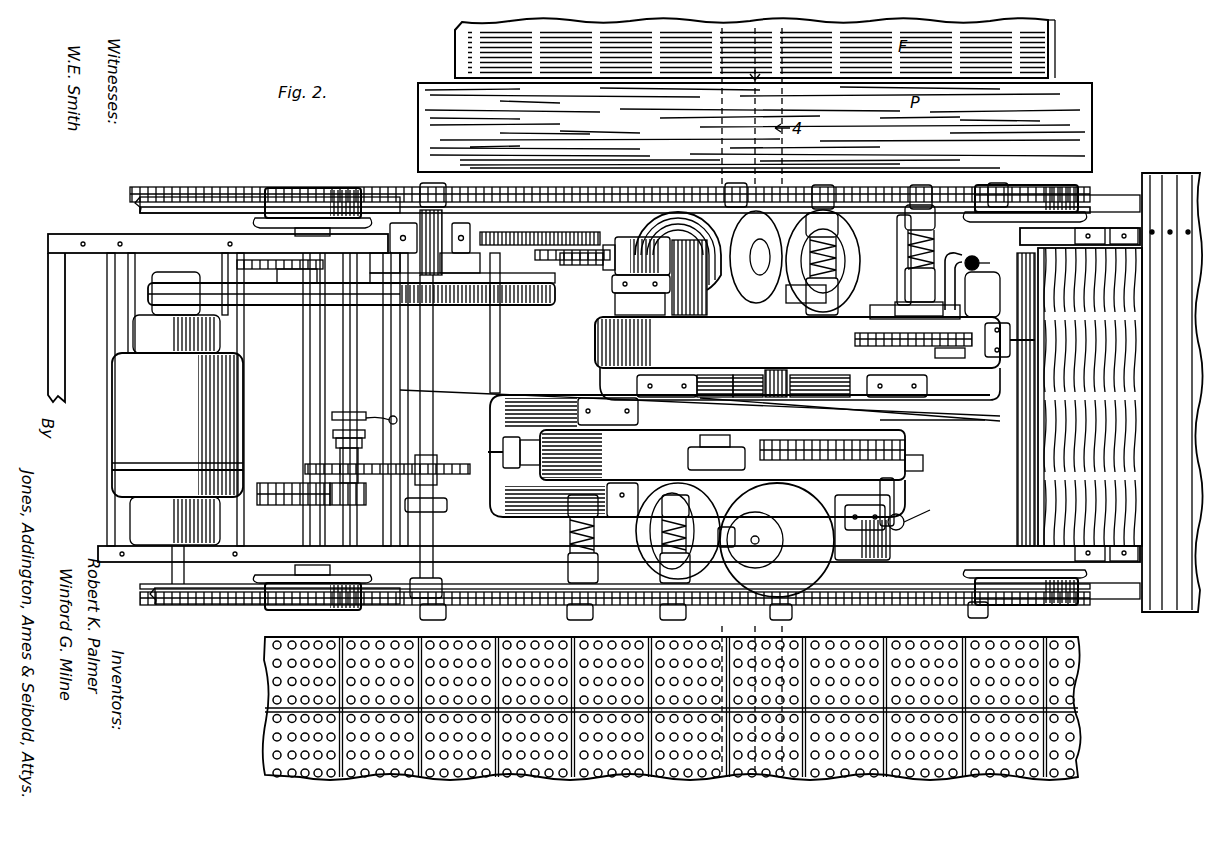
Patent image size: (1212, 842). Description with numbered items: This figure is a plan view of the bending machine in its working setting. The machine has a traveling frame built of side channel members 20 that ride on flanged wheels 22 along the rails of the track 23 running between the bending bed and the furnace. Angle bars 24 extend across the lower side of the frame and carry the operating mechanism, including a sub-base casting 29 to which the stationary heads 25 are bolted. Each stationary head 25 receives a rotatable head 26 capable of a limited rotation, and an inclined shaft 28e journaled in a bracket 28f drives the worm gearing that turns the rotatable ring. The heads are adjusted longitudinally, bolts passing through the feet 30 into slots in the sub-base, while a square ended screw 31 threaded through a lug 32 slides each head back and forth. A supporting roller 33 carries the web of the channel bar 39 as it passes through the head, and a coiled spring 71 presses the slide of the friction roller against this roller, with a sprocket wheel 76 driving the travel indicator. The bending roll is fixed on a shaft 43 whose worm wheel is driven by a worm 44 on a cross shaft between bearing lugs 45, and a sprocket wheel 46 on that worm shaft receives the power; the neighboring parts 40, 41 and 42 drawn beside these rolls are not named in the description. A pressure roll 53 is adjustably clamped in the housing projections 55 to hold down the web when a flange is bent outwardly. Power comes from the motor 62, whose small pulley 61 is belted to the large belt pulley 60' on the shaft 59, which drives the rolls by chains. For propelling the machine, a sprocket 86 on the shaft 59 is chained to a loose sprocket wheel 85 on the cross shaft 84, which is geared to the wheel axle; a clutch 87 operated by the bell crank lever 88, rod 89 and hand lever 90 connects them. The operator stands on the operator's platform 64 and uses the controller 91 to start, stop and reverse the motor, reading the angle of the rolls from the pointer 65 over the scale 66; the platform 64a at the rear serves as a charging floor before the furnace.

The side channel members 20 is at (100, 253).
The flanged wheels 22 is at (284, 190).
The track 23 is at (210, 197).
The angle bars 24 is at (776, 369).
The stationary head 25 is at (722, 457).
The rotatable head 26 is at (797, 342).
The inclined shaft 28e is at (979, 260).
The bracket 28f is at (965, 258).
The sub-base casting 29 is at (515, 392).
The feet 30 is at (858, 265).
The square ended screw 31 is at (1020, 338).
The lug 32 is at (1015, 350).
The supporting roller 33 is at (800, 303).
The channel bar 39 is at (672, 708).
The drum 40 is at (665, 215).
The hub 41 is at (718, 536).
The wheel 42 is at (735, 215).
The shaft 43 is at (915, 267).
The worm 44 is at (860, 215).
The bearing lugs 45 is at (948, 205).
The sprocket wheel 46 is at (425, 186).
The pressure roll 53 is at (855, 562).
The housing projections 55 is at (692, 312).
The shaft 59 is at (433, 395).
The belt pulley 60' is at (351, 296).
The pulley 61 is at (178, 272).
The motor 62 is at (240, 388).
The operator's platform 64 is at (1079, 397).
The platform 64a is at (1172, 392).
The pointer 65 is at (975, 274).
The scale 66 is at (835, 450).
The coiled spring 71 is at (950, 358).
The sprocket wheel 76 is at (782, 372).
The cross shaft 84 is at (345, 357).
The loose sprocket wheel 85 is at (310, 468).
The sprocket 86 is at (425, 578).
The clutch 87 is at (333, 436).
The bell crank lever 88 is at (390, 416).
The rod 89 is at (463, 387).
The hand lever 90 is at (955, 420).
The controller 91 is at (748, 452).